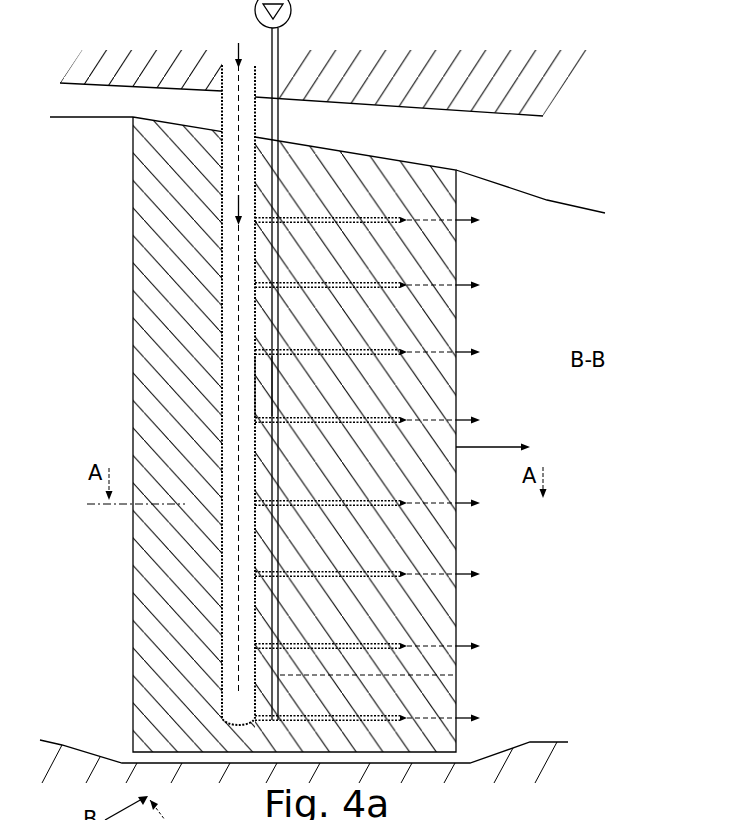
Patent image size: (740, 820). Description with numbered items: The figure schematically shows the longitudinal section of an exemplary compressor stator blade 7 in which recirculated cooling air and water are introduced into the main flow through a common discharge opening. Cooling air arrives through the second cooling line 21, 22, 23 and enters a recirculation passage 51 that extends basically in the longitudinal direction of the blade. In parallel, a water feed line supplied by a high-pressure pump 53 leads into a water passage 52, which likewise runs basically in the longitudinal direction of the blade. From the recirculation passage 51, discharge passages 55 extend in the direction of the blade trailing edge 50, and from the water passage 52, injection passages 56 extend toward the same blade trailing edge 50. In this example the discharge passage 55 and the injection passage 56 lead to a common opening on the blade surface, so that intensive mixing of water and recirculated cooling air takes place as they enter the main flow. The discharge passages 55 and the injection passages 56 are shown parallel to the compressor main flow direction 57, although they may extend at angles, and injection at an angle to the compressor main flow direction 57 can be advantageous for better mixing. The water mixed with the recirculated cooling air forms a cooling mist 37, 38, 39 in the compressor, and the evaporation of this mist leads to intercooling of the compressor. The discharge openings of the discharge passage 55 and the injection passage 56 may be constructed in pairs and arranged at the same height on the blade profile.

The compressor stator blade 7 is at (158, 464).
The second cooling line 21 is at (172, 357).
The second cooling line 22 is at (172, 357).
The second cooling line 23 is at (236, 46).
The cooling mist 37 is at (428, 469).
The cooling mist 38 is at (428, 469).
The cooling mist 39 is at (468, 577).
The blade trailing edge 50 is at (456, 372).
The recirculation passage 51 is at (221, 270).
The water passage 52 is at (296, 393).
The high-pressure pump 53 is at (291, 12).
The discharge passage 55 is at (275, 500).
The injection passage 56 is at (340, 500).
The compressor main flow direction 57 is at (488, 445).